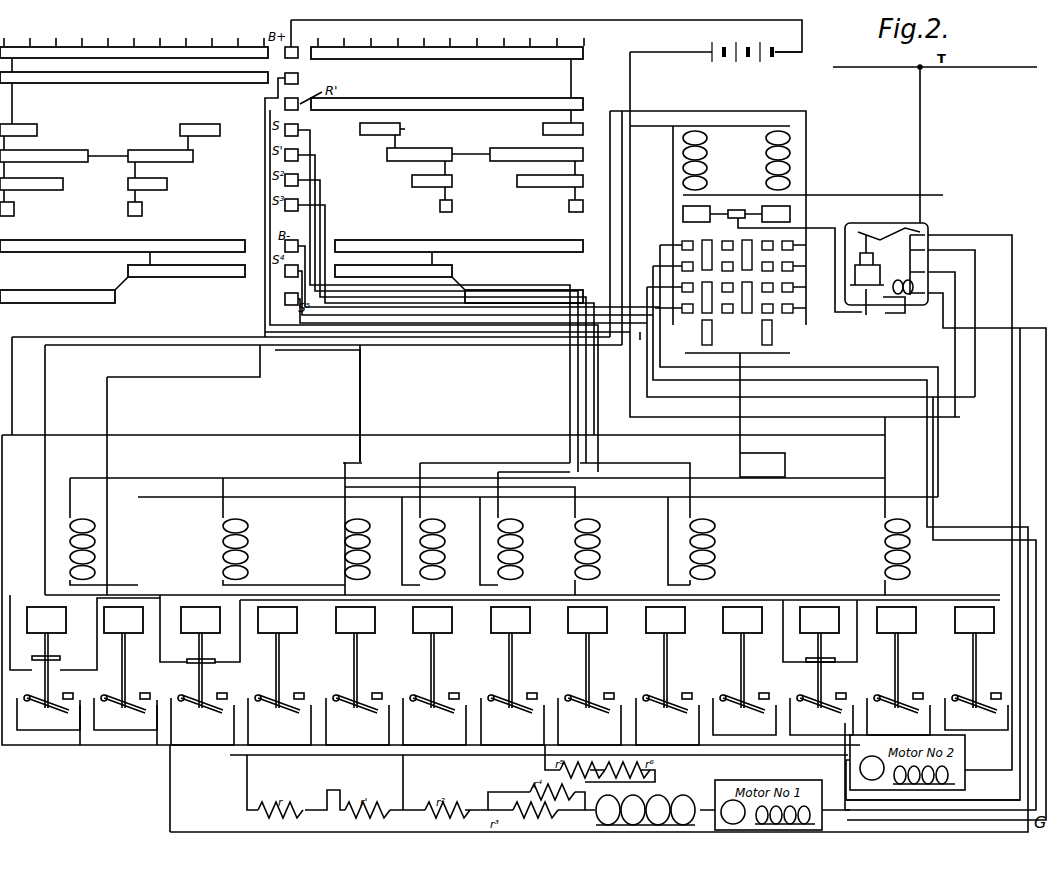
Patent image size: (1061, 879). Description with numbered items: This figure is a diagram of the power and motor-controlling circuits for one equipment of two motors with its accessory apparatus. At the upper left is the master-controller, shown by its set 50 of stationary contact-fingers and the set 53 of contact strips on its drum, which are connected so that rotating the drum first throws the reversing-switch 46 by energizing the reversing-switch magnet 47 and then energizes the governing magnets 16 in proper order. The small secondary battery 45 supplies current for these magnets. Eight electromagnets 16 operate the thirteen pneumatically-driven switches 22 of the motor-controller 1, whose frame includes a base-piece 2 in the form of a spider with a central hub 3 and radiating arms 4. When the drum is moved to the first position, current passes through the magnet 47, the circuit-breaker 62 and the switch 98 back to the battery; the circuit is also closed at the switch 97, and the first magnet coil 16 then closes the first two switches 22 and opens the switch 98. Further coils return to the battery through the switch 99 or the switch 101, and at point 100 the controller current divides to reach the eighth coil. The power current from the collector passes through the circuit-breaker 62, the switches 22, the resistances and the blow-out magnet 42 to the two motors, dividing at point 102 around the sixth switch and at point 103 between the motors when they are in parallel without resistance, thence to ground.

The motor-controller 1 is at (975, 502).
The base-piece 2 is at (959, 323).
The central hub 3 is at (949, 344).
The radiating arms 4 is at (945, 556).
The electromagnet 16 is at (480, 549).
The switch 22 is at (512, 676).
The blow-out magnet 42 is at (641, 810).
The secondary battery 45 is at (716, 63).
The reversing-switch 46 is at (765, 333).
The reversing-switch magnet 47 is at (776, 218).
The set of stationary contact-fingers 50 is at (302, 81).
The set of contact strips 53 is at (298, 164).
The circuit-breaker 62 is at (886, 191).
The switch 97 is at (688, 340).
The switch 98 is at (85, 632).
The switch 99 is at (820, 631).
The dividing point 100 is at (762, 415).
The switch 101 is at (200, 629).
The dividing point 102 is at (429, 744).
The dividing point 103 is at (691, 743).